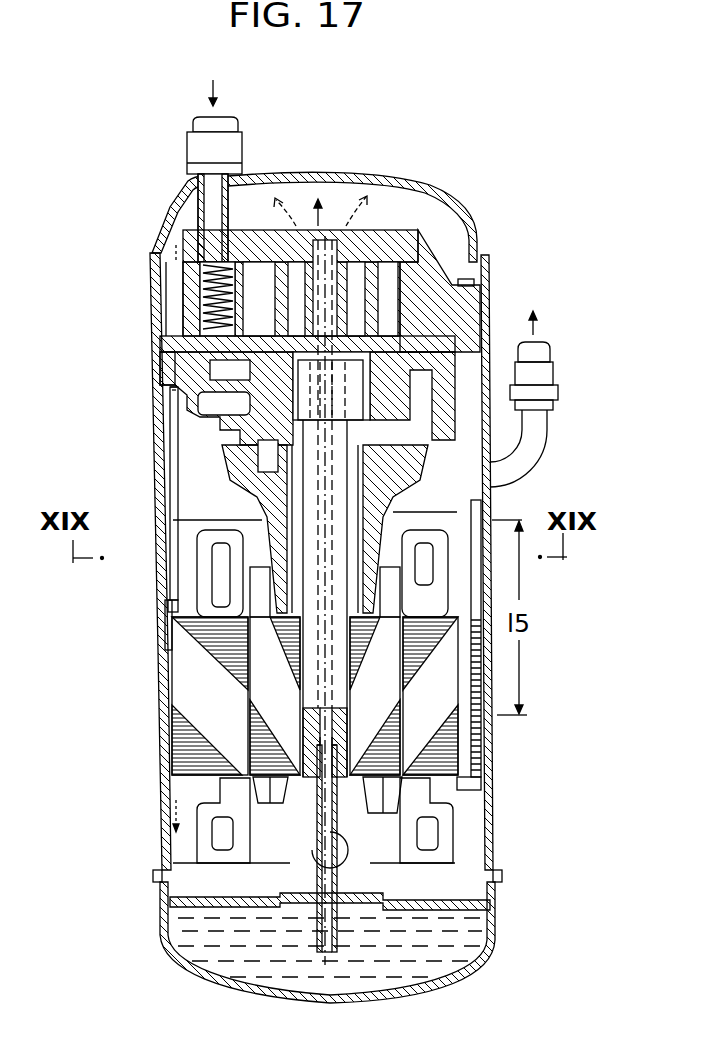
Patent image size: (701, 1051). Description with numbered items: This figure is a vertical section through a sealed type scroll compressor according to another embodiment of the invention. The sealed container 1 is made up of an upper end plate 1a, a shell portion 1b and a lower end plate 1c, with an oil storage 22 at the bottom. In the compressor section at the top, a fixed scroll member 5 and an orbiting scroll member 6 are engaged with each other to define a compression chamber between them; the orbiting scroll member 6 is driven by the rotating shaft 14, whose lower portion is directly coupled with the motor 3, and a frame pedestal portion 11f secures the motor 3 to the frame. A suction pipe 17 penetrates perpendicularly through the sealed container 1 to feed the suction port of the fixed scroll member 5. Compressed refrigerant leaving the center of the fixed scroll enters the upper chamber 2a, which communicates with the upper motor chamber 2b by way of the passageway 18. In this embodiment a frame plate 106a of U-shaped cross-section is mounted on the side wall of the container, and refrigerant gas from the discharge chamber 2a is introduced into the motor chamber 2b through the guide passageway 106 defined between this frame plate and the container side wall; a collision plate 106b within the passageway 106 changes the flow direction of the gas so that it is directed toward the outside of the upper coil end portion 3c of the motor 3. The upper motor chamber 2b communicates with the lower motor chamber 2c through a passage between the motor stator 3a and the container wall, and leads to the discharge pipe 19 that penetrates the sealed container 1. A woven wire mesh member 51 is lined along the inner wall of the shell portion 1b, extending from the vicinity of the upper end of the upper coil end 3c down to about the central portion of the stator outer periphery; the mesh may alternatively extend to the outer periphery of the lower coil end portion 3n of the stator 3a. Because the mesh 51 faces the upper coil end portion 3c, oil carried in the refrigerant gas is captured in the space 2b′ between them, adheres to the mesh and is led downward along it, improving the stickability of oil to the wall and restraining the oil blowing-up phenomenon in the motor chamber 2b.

The sealed container 1 is at (343, 588).
The upper end plate 1a is at (467, 213).
The shell portion 1b is at (493, 740).
The lower end plate 1c is at (198, 985).
The upper chamber 2a is at (388, 197).
The upper motor chamber 2b is at (182, 452).
The space between wire mesh member and upper coil end portion 2b′ is at (163, 585).
The lower motor chamber 2c is at (190, 828).
The motor 3 is at (329, 669).
The motor stator 3a is at (180, 728).
The upper coil end portion 3c is at (222, 537).
The lower coil end portion 3n is at (447, 843).
The fixed scroll member 5 is at (428, 267).
The orbiting scroll member 6 is at (442, 340).
The frame pedestal portion 11f is at (470, 508).
The rotating shaft 14 is at (305, 603).
The suction pipe 17 is at (240, 128).
The passageway 18 is at (162, 363).
The discharge pipe 19 is at (557, 390).
The oil storage 22 is at (460, 958).
The woven wire mesh member 51 is at (187, 507).
The guide passageway 106 is at (130, 514).
The frame plate 106a is at (172, 473).
The collision plate 106b is at (158, 612).